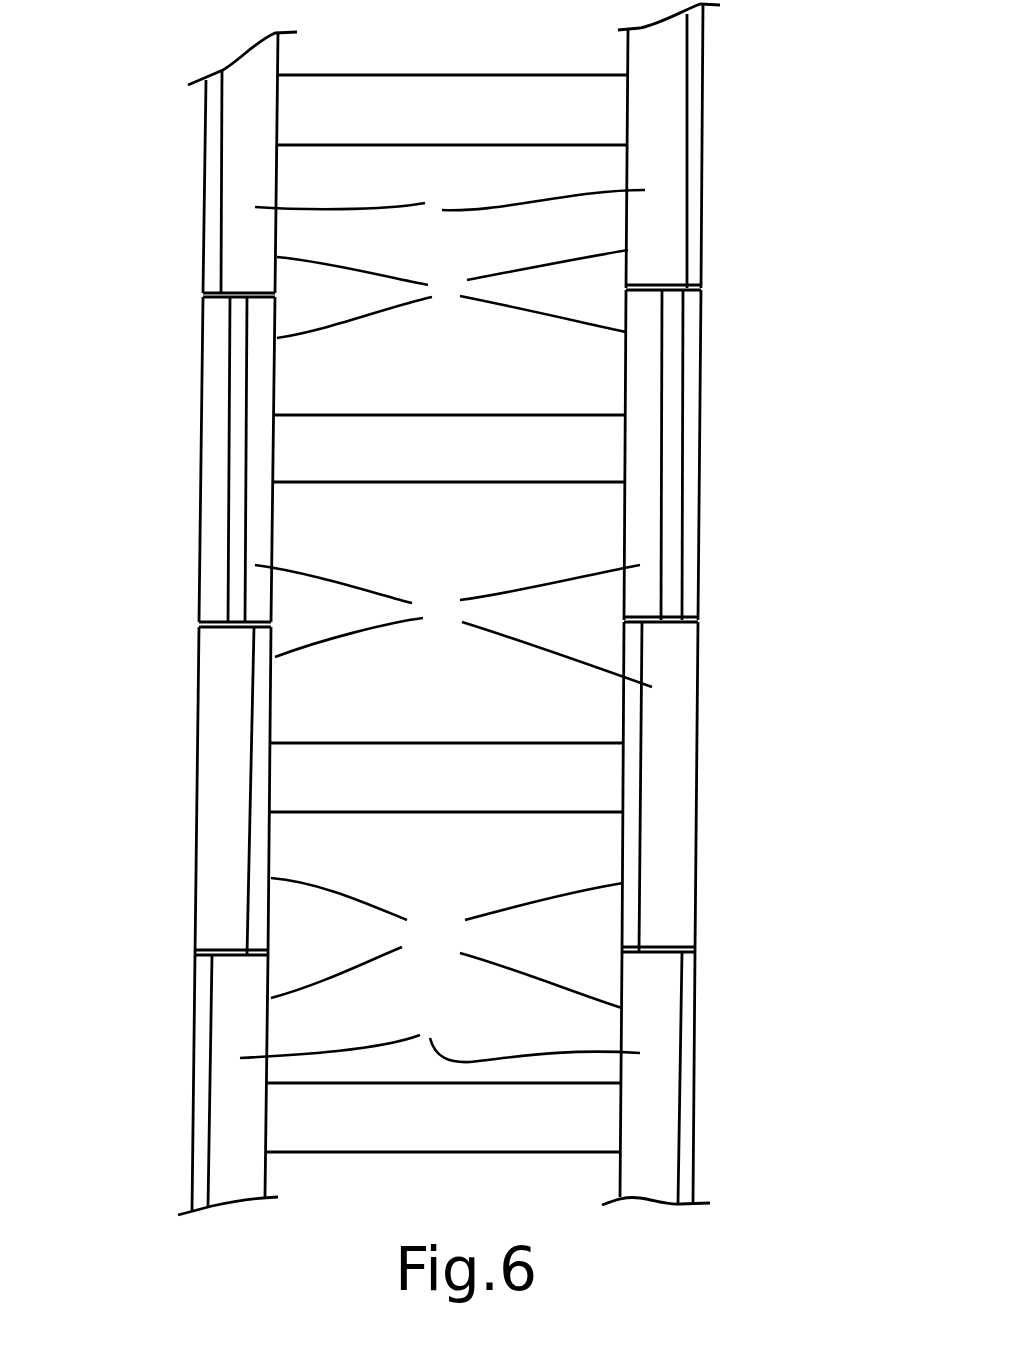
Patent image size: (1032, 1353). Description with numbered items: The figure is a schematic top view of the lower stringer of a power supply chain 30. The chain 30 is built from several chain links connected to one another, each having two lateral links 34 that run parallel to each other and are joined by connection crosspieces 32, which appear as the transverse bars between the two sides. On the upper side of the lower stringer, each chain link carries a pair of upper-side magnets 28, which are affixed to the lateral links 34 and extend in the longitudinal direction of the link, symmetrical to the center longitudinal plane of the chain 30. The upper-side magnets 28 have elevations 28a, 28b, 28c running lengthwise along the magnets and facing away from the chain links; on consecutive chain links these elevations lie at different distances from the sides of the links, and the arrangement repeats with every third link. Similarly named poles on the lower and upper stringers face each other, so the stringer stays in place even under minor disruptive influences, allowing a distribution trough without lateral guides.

The upper-side magnets 28 is at (446, 617).
The elevation 28a is at (218, 202).
The elevation 28b is at (243, 505).
The elevation 28c is at (258, 765).
The power supply chain 30 is at (733, 588).
The connection crosspieces 32 is at (486, 132).
The lateral links 34 is at (449, 629).